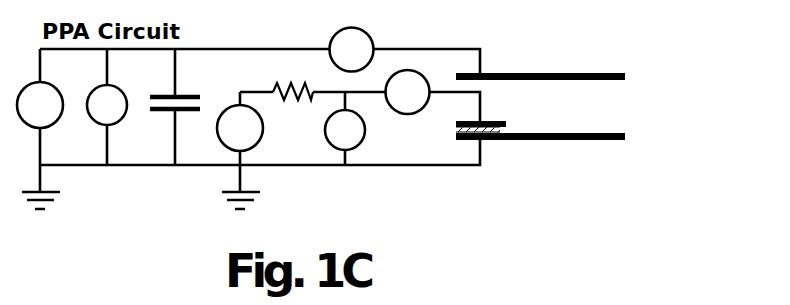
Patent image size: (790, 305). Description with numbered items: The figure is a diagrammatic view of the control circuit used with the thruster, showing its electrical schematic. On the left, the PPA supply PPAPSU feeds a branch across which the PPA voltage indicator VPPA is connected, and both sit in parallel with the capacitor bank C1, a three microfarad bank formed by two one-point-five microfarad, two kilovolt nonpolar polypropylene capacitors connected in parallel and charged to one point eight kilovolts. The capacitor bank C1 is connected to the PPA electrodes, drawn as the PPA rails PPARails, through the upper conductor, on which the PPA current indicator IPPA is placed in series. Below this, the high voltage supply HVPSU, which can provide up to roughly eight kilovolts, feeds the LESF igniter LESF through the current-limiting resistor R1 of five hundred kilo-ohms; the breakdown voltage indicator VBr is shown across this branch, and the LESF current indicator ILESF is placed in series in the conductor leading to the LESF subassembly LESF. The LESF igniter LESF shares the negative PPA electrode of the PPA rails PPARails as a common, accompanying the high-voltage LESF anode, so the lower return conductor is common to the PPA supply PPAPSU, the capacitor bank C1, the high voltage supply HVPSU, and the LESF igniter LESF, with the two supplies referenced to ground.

The PPA power supply unit PPAPSU is at (53, 123).
The PPA voltage meter VPPA is at (107, 105).
The capacitor bank C1 is at (200, 90).
The high voltage supply HVPSU is at (223, 134).
The current-limiting resistor R1 is at (295, 103).
The breakdown voltage meter VBr is at (345, 130).
The PPA current meter IPPA is at (352, 50).
The LESF current meter ILESF is at (408, 92).
The PPA electrodes PPARails is at (540, 64).
The LESF igniter LESF is at (500, 142).